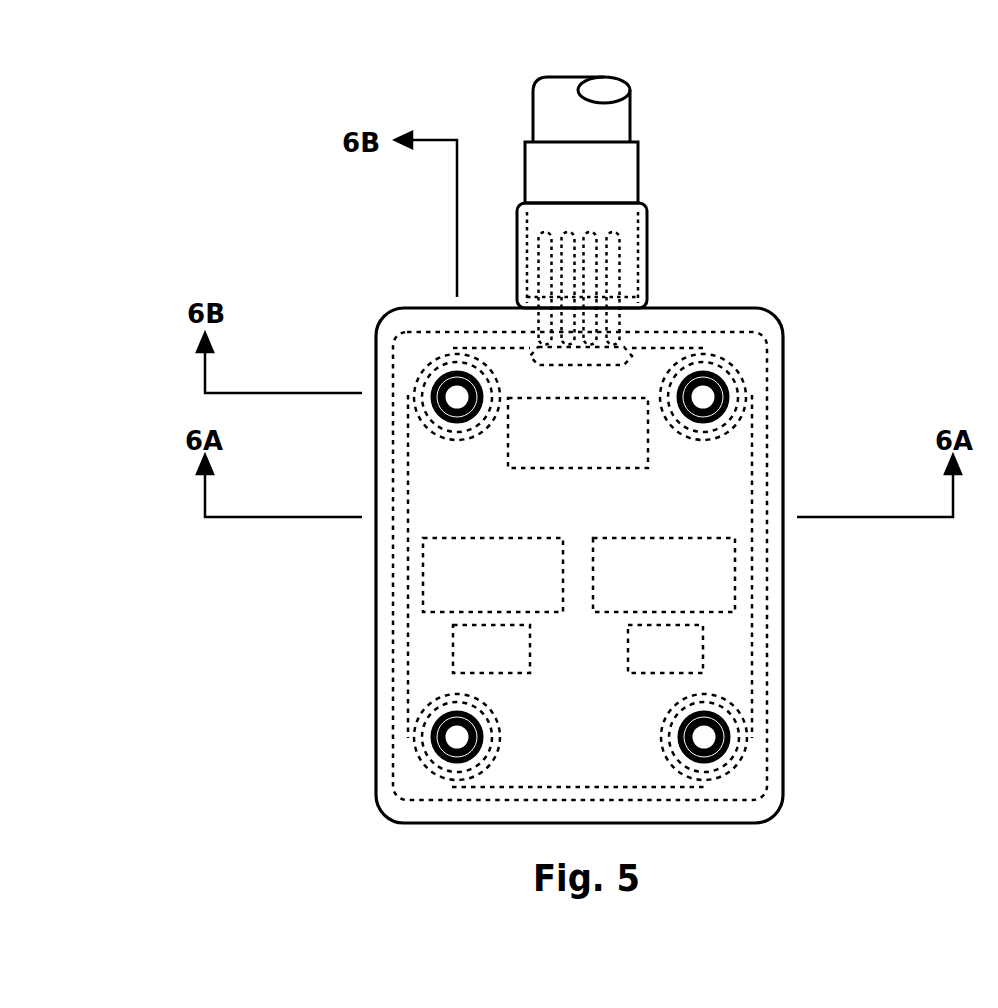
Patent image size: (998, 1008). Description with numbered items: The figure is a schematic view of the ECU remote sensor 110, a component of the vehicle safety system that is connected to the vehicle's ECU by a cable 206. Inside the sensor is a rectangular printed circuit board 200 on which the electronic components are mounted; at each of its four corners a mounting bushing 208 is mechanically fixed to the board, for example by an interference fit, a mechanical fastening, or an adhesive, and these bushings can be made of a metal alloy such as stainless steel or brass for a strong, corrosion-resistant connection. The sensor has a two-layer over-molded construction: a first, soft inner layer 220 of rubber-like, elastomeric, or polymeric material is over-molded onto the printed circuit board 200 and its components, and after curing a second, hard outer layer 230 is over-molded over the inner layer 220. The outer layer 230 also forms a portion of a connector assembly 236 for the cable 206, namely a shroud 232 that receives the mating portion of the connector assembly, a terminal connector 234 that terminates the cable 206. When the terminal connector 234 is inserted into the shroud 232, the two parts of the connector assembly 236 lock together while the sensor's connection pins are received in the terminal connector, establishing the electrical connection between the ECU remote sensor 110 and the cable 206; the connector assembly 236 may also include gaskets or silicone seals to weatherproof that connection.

The ECU remote sensor 110 is at (260, 178).
The printed circuit board 200 is at (660, 333).
The cable 206 is at (610, 125).
The mounting bushing 208 is at (442, 368).
The soft inner layer 220 is at (753, 647).
The hard outer layer 230 is at (773, 427).
The shroud 232 is at (627, 218).
The terminal connector 234 is at (625, 172).
The connector assembly 236 is at (674, 206).